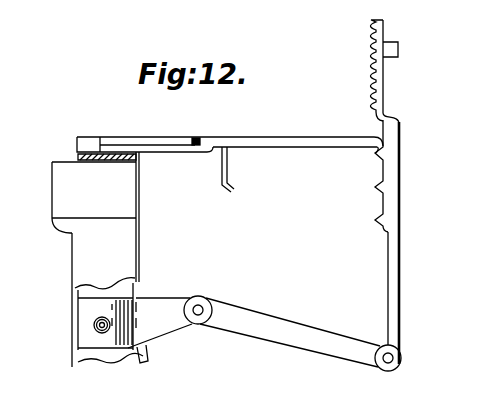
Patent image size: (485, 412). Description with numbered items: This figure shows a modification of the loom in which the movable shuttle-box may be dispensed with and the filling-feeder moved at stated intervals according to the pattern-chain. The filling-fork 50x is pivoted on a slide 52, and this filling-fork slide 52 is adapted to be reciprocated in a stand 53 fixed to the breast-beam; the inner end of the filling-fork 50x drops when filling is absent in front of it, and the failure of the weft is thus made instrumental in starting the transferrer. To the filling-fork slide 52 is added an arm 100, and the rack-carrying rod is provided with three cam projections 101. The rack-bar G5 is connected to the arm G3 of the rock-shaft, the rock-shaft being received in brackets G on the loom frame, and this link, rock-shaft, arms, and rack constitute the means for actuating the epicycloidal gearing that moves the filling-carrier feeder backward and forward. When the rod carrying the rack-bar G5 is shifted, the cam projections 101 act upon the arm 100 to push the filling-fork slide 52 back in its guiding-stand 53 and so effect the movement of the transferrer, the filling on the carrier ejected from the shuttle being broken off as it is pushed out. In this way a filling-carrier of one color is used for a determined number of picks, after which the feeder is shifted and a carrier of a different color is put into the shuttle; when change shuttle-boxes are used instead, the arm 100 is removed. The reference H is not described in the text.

The stand 53 is at (80, 150).
The slide 52 is at (174, 152).
The filling-fork 50x is at (229, 170).
The arm 100 is at (284, 134).
The cam projections 101 is at (374, 155).
The rack-bar G5 is at (388, 279).
The brackets G is at (159, 303).
The arm G3 is at (268, 324).
The frame H is at (70, 290).